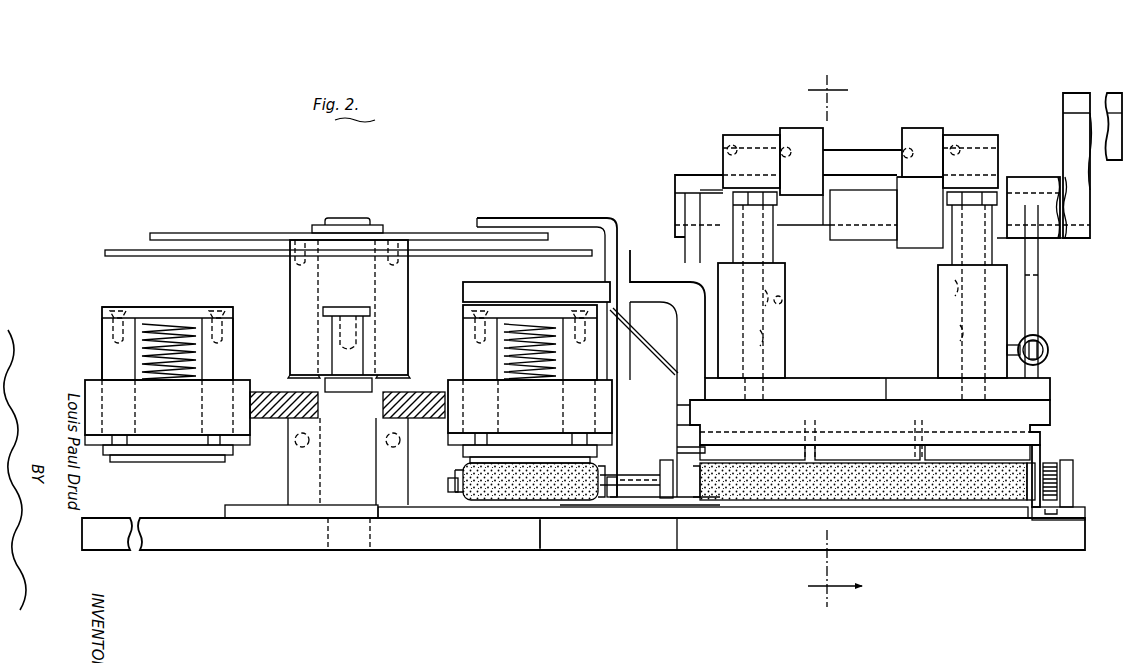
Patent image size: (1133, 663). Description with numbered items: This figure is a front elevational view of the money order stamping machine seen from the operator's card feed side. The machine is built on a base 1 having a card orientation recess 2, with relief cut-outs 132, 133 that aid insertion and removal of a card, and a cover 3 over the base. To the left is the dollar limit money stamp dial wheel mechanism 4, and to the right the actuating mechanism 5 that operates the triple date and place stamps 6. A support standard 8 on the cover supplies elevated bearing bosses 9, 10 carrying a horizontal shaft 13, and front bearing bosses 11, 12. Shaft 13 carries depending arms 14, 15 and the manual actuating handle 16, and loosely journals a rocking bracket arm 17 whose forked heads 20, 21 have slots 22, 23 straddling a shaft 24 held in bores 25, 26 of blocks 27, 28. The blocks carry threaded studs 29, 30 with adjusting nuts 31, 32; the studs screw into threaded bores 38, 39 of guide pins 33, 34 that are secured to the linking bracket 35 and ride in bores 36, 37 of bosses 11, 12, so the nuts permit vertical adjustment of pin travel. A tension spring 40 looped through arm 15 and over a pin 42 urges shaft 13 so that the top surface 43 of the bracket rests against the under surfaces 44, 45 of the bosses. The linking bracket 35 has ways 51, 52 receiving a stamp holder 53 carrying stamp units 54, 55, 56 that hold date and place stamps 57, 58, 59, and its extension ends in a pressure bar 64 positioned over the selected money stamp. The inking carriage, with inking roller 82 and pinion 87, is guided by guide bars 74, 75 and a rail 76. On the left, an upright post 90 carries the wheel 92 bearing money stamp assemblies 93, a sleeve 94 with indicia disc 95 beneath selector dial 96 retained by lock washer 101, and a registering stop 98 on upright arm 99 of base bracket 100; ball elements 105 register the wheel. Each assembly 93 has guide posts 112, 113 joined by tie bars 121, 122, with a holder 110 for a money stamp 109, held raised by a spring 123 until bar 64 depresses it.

The base 1 is at (200, 550).
The money order card orientation slot or recess 2 is at (428, 518).
The cover 3 is at (235, 505).
The dollar limit money stamp holding dial wheel mechanism 4 is at (268, 192).
The actuating mechanism 5 is at (938, 118).
The triple date and place stamps 6 is at (862, 378).
The support standard 8 is at (826, 341).
The bearing boss 9 is at (730, 236).
The bearing boss 10 is at (1032, 240).
The front bearing boss 11 is at (268, 420).
The front bearing boss 12 is at (937, 312).
The shaft 13 is at (788, 225).
The depending arm 14 is at (675, 178).
The depending arm 15 is at (1030, 177).
The actuating handle 16 is at (1083, 96).
The rocking bracket arm 17 is at (802, 232).
The head 20 is at (800, 128).
The head 21 is at (915, 128).
The slot 22 is at (782, 148).
The slot 23 is at (905, 152).
The shaft 24 is at (846, 150).
The bore 25 is at (722, 148).
The bore 26 is at (958, 150).
The block 27 is at (728, 162).
The block 28 is at (992, 158).
The threaded stud 29 is at (780, 246).
The threaded stud 30 is at (945, 255).
The adjusting nut 31 is at (700, 190).
The adjusting nut 32 is at (958, 190).
The guide pin 33 is at (785, 342).
The guide pin 34 is at (960, 332).
The linking bracket 35 is at (705, 388).
The bore 36 is at (790, 298).
The bore 37 is at (955, 288).
The threaded bore 38 is at (778, 296).
The threaded bore 39 is at (1038, 276).
The tension spring 40 is at (1050, 350).
The pin 42 is at (1012, 345).
The top surface 43 is at (888, 378).
The under surface 44 is at (870, 372).
The under surface 45 is at (950, 378).
The way 51 is at (690, 412).
The way 52 is at (1048, 430).
The stamp holder 53 is at (1042, 410).
The stamp unit 54 is at (700, 447).
The stamp unit 55 is at (865, 440).
The stamp unit 56 is at (960, 445).
The date and place stamp 57 is at (742, 470).
The date and place stamp 58 is at (833, 463).
The date and place stamp 59 is at (960, 470).
The pressure bar 64 is at (566, 284).
The guide bar 74 is at (665, 468).
The guide bar 75 is at (1086, 472).
The rail 76 is at (448, 490).
The inking roller 82 is at (515, 500).
The pinion 87 is at (1048, 463).
The upright post 90 is at (350, 218).
The wheel 92 is at (88, 395).
The money stamp assembly 93 is at (96, 318).
The sleeve 94 is at (410, 280).
The indicia disc 95 is at (122, 250).
The selector dial 96 is at (215, 233).
The registering stop 98 is at (522, 218).
The upright arm 99 is at (631, 268).
The base mounted bracket 100 is at (633, 500).
The lock washer 101 is at (380, 225).
The ball element 105 is at (300, 447).
The money stamp 109 is at (127, 457).
The holder 110 is at (208, 448).
The guide post 112 is at (102, 340).
The guide post 113 is at (233, 345).
The tie bar 121 is at (100, 447).
The tie bar 122 is at (140, 307).
The spring 123 is at (176, 320).
The relief cut-out 132 is at (552, 540).
The relief cut-out 133 is at (590, 510).